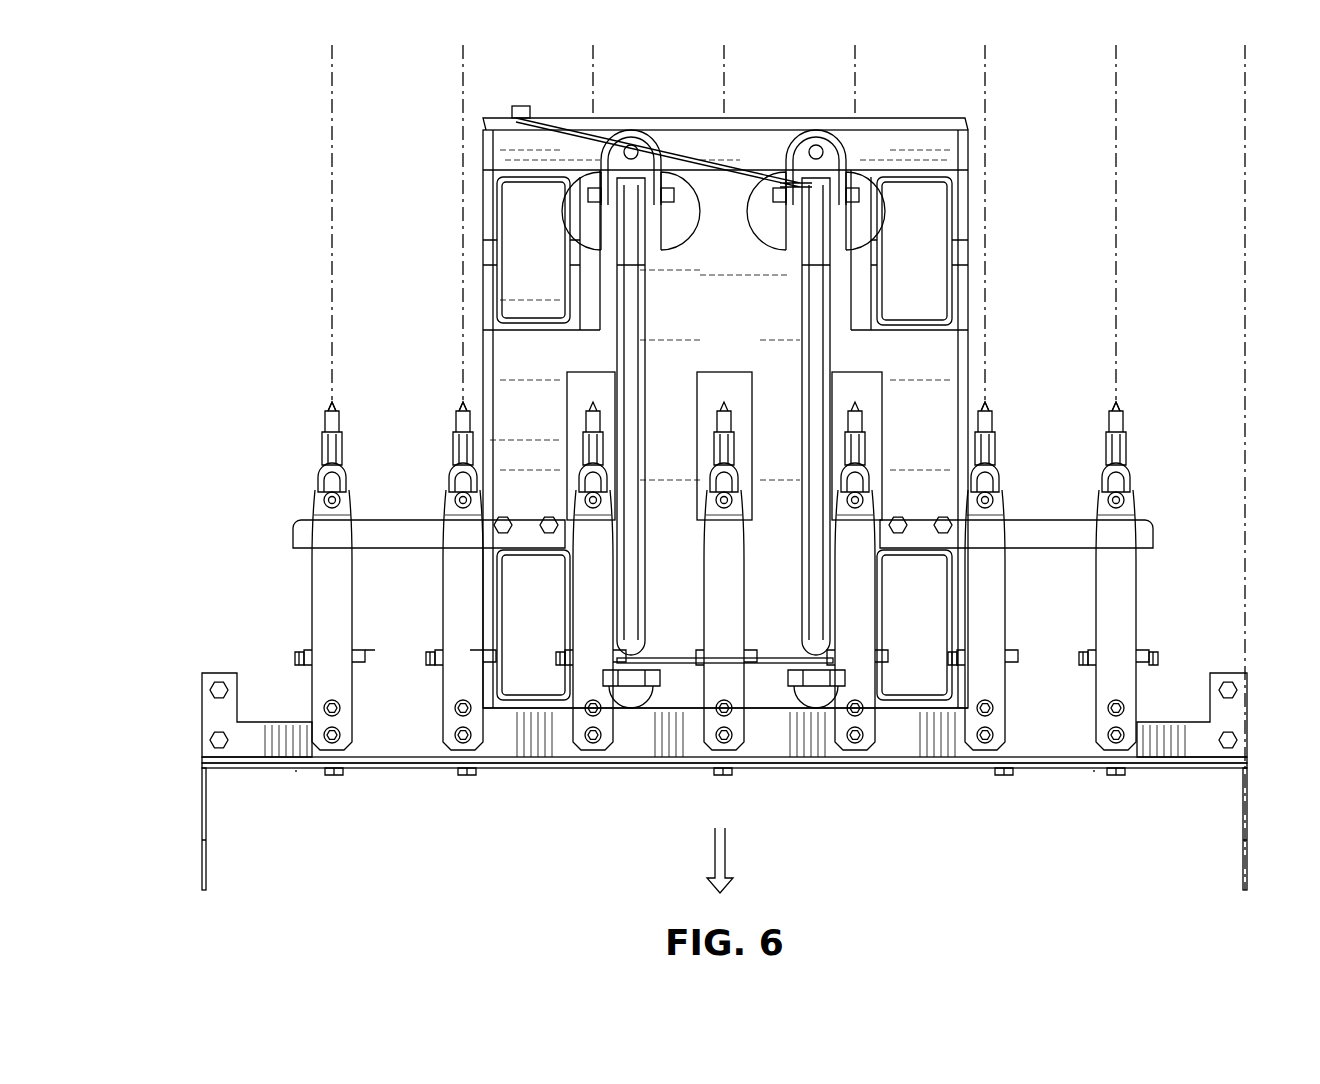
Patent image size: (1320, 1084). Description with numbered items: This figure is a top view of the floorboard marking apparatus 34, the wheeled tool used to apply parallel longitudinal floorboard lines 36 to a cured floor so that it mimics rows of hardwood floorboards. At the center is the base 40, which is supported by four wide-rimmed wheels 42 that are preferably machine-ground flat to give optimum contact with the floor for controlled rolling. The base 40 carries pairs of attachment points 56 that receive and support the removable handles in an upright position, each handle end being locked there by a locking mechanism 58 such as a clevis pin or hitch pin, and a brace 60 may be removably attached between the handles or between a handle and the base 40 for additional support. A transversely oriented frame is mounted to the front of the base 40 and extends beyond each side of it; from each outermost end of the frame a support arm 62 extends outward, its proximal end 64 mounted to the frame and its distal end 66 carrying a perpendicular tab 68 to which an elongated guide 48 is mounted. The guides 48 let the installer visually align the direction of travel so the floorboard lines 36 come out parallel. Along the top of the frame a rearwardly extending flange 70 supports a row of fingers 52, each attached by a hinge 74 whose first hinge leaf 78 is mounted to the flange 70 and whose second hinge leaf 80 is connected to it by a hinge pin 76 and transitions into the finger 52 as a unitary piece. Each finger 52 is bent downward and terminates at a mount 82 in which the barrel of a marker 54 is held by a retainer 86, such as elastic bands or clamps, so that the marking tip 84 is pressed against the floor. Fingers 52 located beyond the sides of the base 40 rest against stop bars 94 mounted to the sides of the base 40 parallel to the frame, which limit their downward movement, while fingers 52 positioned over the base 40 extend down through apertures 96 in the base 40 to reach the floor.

The floorboard marking apparatus 34 is at (150, 186).
The floorboard lines 36 is at (332, 107).
The base 40 is at (762, 125).
The wheels 42 is at (515, 220).
The elongated guides 48 is at (202, 836).
The fingers 52 is at (312, 587).
The marker 54 is at (326, 418).
The attachment points 56 is at (650, 215).
The locking mechanism 58 is at (790, 194).
The brace 60 is at (535, 115).
The support arm 62 is at (298, 768).
The proximal end 64 is at (462, 775).
The distal end 66 is at (202, 766).
The tab 68 is at (210, 716).
The flange 70 is at (772, 740).
The hinge 74 is at (298, 656).
The hinge pin 76 is at (430, 660).
The first hinge leaf 78 is at (342, 692).
The second hinge leaf 80 is at (350, 586).
The mount 82 is at (318, 475).
The marking end or tip 84 is at (462, 404).
The retainer 86 is at (448, 506).
The stop bar 94 is at (1050, 548).
The apertures 96 is at (723, 370).